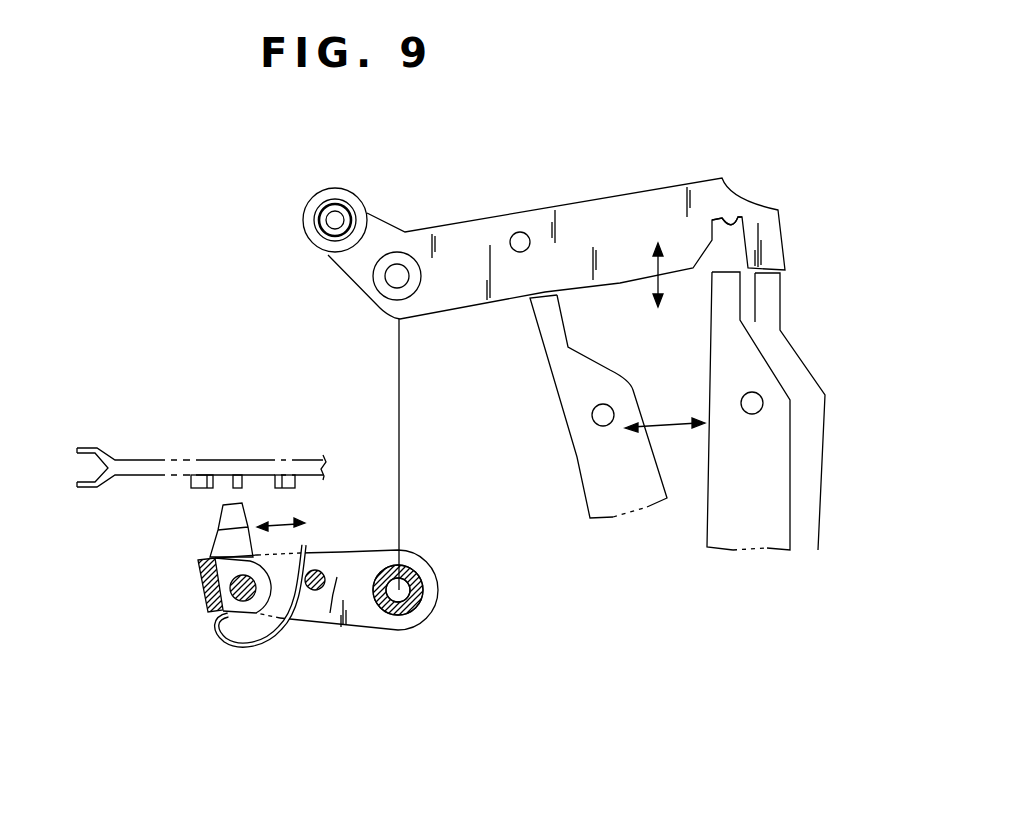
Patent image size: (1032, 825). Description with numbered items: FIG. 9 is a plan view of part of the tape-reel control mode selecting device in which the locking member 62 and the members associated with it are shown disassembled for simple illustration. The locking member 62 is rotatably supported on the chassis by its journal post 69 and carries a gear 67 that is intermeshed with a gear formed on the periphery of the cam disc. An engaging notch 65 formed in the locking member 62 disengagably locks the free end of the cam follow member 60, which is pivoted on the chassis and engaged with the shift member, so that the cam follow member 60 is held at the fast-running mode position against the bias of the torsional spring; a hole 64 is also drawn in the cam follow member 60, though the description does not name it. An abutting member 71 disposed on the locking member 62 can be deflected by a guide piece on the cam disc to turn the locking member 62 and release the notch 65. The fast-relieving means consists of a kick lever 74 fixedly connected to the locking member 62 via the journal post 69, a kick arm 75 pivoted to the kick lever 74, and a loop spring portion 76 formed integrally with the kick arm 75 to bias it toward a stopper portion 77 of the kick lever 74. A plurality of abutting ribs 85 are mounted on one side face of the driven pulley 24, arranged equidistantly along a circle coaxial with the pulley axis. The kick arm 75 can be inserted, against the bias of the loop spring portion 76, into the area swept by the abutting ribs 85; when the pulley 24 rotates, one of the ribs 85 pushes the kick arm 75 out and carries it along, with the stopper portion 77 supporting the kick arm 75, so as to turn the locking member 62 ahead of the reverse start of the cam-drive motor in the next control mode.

The driven pulley 24 is at (100, 452).
The cam follow member 60 is at (708, 513).
The locking member 62 is at (593, 227).
The hole 64 is at (763, 410).
The engaging notch 65 is at (737, 218).
The gear 67 is at (302, 237).
The journal post 69 is at (385, 290).
The abutting member 71 is at (520, 233).
The kick lever 74 is at (363, 613).
The kick arm 75 is at (237, 517).
The loop spring portion 76 is at (270, 640).
The stopper portion 77 is at (198, 580).
The abutting ribs 85 is at (193, 488).